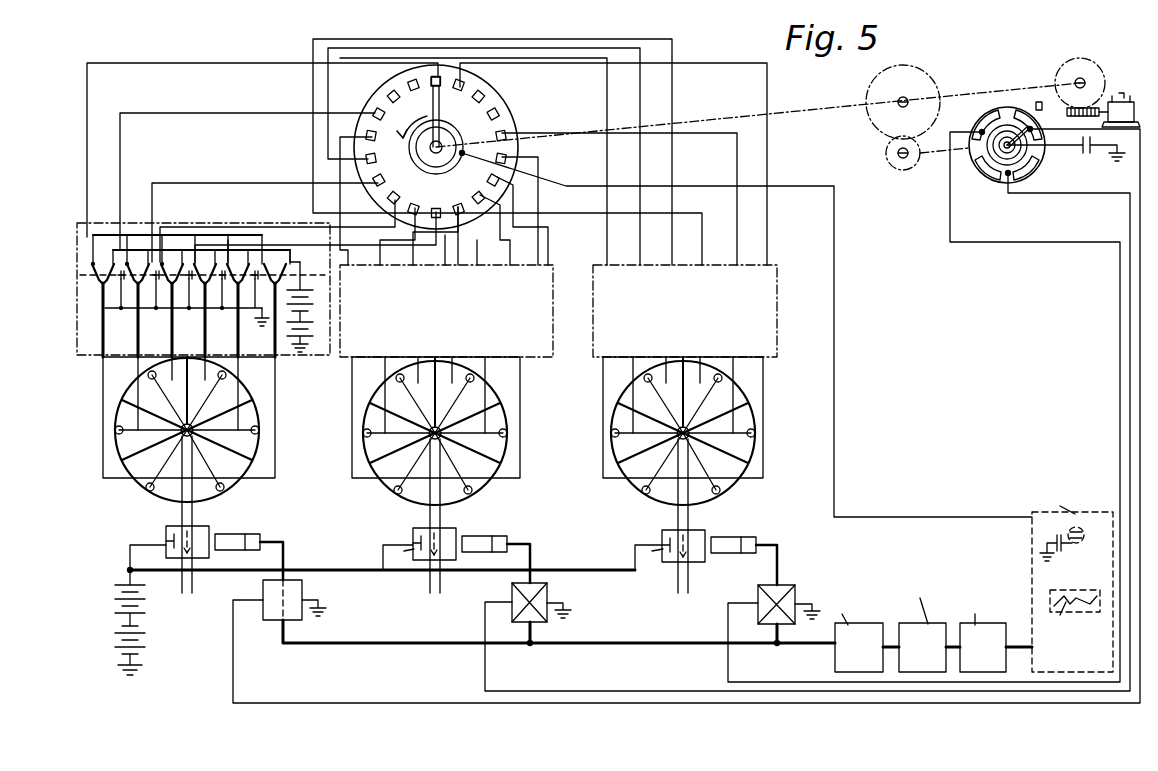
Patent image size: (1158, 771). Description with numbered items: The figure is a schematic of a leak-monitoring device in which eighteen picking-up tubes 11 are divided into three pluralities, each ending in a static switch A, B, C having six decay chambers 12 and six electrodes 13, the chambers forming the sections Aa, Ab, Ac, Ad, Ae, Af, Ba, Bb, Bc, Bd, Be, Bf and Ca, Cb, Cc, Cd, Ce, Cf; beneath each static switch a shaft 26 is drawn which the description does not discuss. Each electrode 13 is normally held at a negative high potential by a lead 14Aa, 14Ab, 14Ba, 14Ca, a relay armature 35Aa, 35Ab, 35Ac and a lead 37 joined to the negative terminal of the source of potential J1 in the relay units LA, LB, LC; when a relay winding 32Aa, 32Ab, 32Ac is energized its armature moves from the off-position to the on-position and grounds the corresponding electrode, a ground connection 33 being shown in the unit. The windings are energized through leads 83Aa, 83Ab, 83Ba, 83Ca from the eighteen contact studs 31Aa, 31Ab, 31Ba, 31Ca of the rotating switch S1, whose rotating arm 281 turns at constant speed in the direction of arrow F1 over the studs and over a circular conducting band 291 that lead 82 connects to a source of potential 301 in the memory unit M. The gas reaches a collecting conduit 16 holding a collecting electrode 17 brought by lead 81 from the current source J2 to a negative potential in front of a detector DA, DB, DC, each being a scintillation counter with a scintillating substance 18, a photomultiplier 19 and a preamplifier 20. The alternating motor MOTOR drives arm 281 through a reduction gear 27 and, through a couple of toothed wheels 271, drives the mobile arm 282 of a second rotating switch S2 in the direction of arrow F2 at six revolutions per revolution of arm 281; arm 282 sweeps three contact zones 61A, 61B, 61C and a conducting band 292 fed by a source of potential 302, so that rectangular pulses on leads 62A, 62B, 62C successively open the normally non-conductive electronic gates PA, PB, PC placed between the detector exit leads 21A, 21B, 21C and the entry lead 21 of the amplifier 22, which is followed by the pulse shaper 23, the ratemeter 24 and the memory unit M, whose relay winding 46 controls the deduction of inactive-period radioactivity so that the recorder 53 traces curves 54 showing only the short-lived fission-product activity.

The rotating switch S1 is at (503, 99).
The rotating arm 281 is at (442, 110).
The circular conducting band 291 is at (414, 152).
The arrow F1 is at (403, 131).
The contact stud 31Aa is at (468, 86).
The contact stud 31Ab is at (375, 117).
The contact stud 31Ba is at (462, 92).
The contact stud 31Ca is at (412, 90).
The lead 83Aa is at (233, 64).
The lead 83Ab is at (228, 117).
The lead 83Ba is at (328, 97).
The lead 83Ca is at (573, 63).
The lead 82 is at (834, 207).
The relay unit LA is at (95, 350).
The relay unit LB is at (553, 316).
The relay unit LC is at (777, 315).
The relay armature 35Aa is at (93, 264).
The relay armature 35Ab is at (127, 264).
The relay armature 35Ac is at (162, 264).
The relay winding 32Aa is at (91, 285).
The relay winding 32Ab is at (127, 285).
The relay winding 32Ac is at (162, 285).
The lead 14Aa is at (110, 338).
The lead 14Ab is at (142, 338).
The lead 14Ba is at (352, 397).
The lead 14Ca is at (603, 397).
The scintillating substance 18 is at (232, 240).
The ground connection 33 is at (260, 321).
The lead 37 is at (300, 262).
The source of potential J1 is at (300, 307).
The static switch A is at (189, 436).
The static switch B is at (419, 431).
The static switch C is at (697, 431).
The picking-up tube 11 is at (143, 488).
The decay chamber 12 is at (172, 488).
The electrode 13 is at (168, 457).
The section of static switch Aa is at (161, 484).
The section of static switch Ab is at (124, 421).
The section of static switch Ac is at (147, 383).
The section of static switch Ad is at (225, 383).
The section of static switch Ae is at (248, 439).
The section of static switch Af is at (211, 484).
The section of static switch Ba is at (409, 489).
The section of static switch Bb is at (372, 441).
The section of static switch Bc is at (396, 386).
The section of static switch Bd is at (473, 386).
The section of static switch Be is at (495, 441).
The section of static switch Bf is at (459, 489).
The section of static switch Ca is at (656, 485).
The section of static switch Cb is at (621, 441).
The section of static switch Cc is at (647, 386).
The section of static switch Cd is at (714, 387).
The section of static switch Ce is at (743, 427).
The section of static switch Cf is at (707, 489).
The rotor shaft 26 is at (193, 579).
The collecting conduit 16 is at (198, 530).
The collecting electrode 17 is at (170, 548).
The photomultiplier 19 is at (235, 534).
The preamplifier 20 is at (256, 536).
The radiation detector DA is at (227, 538).
The radiation detector DB is at (508, 524).
The radiation detector DC is at (756, 524).
The lead 81 is at (128, 571).
The current source J2 is at (122, 622).
The electronic gate PA is at (300, 590).
The electronic gate PB is at (547, 592).
The electronic gate PC is at (795, 592).
The exit lead 21A is at (290, 548).
The exit lead 21B is at (537, 549).
The exit lead 21C is at (782, 552).
The entry lead 21 is at (812, 648).
The lead 62A is at (1140, 353).
The lead 62B is at (1130, 327).
The lead 62C is at (1120, 301).
The amplifier 22 is at (865, 638).
The pulse shaper 23 is at (923, 630).
The ratemeter 24 is at (986, 638).
The memory unit M is at (1093, 512).
The source of potential 301 is at (1063, 545).
The relay winding 46 is at (1083, 534).
The recorder 53 is at (1083, 590).
The curves 54 is at (1063, 612).
The reduction gear 27 is at (1093, 88).
The couple of toothed wheels 271 is at (884, 147).
The mobile arm 282 is at (1022, 106).
The alternating motor MOTOR is at (1118, 116).
The rotating switch S2 is at (1036, 155).
The arrow F2 is at (1034, 136).
The circular conducting band 292 is at (1000, 163).
The contact zone 61A is at (1031, 127).
The contact zone 61B is at (1020, 168).
The contact zone 61C is at (980, 129).
The source of potential 302 is at (1087, 155).